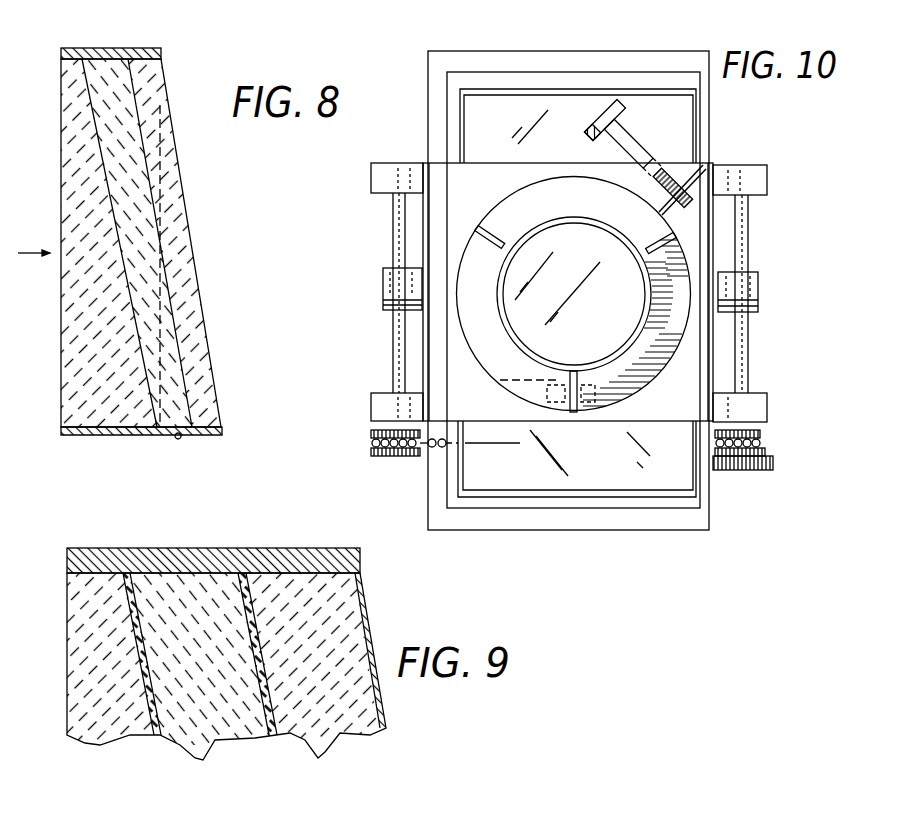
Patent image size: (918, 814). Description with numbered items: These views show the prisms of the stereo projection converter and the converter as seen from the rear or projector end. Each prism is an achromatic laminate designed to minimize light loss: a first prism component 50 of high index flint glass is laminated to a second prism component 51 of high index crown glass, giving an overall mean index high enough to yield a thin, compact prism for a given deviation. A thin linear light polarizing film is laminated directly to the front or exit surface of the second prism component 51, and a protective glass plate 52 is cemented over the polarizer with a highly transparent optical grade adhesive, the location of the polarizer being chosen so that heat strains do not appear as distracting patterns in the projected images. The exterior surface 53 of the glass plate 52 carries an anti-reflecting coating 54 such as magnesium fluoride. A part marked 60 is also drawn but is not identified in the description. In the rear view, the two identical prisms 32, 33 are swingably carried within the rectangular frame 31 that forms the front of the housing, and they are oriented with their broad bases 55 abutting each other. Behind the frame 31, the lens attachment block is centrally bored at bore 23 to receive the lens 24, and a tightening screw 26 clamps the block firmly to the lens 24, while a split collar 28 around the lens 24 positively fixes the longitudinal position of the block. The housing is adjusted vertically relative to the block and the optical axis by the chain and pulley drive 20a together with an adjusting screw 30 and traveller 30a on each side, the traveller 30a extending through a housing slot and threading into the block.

In FIG. 10, the chain and pulley drive 20a is at (384, 453).
In FIG. 10, the bore 23 is at (506, 202).
In FIG. 10, the lens 24 is at (585, 206).
In FIG. 10, the tightening screw 26 is at (623, 118).
In FIG. 10, the split collar 28 is at (492, 378).
In FIG. 10, the adjusting screw 30 is at (392, 236).
In FIG. 10, the traveller 30a is at (384, 290).
In FIG. 10, the rectangular frame 31 is at (656, 46).
In FIG. 10, the prism 32 is at (522, 133).
In FIG. 10, the prism 33 is at (518, 477).
In FIG. 8, the first prism component 50 is at (62, 172).
In FIG. 9, the first prism component 50 is at (72, 627).
In FIG. 8, the second prism component 51 is at (100, 115).
In FIG. 9, the second prism component 51 is at (211, 584).
In FIG. 8, the protective glass plate 52 is at (157, 108).
In FIG. 9, the protective glass plate 52 is at (354, 585).
In FIG. 8, the exterior surface 53 is at (178, 172).
In FIG. 9, the exterior surface 53 is at (364, 600).
In FIG. 9, the anti-reflecting coating 54 is at (372, 640).
In FIG. 8, the broad base 55 is at (176, 436).
In FIG. 9, the bonding layer 60 is at (276, 731).